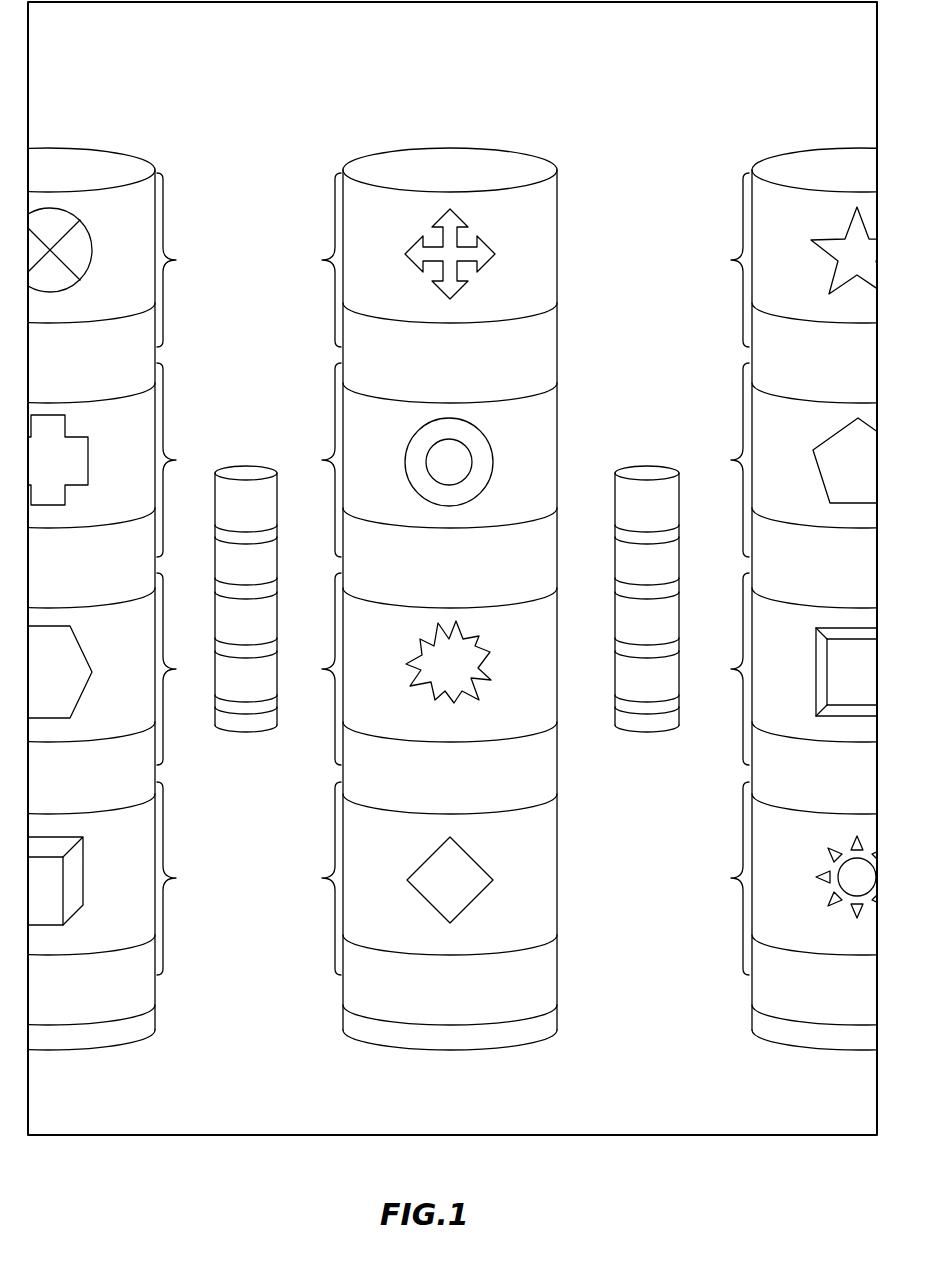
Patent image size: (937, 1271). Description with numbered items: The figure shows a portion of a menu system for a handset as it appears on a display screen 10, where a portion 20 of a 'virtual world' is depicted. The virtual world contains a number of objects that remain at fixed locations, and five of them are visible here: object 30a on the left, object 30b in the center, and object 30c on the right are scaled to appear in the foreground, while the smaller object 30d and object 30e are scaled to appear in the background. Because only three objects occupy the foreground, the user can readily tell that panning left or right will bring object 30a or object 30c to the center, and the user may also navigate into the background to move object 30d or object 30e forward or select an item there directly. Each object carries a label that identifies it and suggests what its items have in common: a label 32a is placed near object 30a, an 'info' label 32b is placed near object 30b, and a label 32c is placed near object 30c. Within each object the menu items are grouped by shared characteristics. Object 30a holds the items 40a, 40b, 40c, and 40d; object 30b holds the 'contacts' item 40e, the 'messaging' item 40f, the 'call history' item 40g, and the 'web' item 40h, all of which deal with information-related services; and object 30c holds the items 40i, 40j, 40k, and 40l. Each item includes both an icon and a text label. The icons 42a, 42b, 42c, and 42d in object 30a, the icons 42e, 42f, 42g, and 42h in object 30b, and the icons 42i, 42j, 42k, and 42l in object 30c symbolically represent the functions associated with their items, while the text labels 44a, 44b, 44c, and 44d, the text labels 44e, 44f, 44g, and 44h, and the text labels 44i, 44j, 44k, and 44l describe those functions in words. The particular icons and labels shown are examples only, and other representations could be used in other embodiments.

The display screen 10 is at (127, 1137).
The portion of virtual world 20 is at (142, 62).
The object 30a is at (94, 1052).
The object 30b is at (462, 1050).
The object 30c is at (790, 1048).
The object 30d is at (267, 738).
The object 30e is at (669, 738).
The label 32a is at (78, 125).
The info label 32b is at (483, 120).
The label 32c is at (798, 120).
The menu item 40a is at (177, 260).
The menu item 40b is at (177, 459).
The menu item 40c is at (177, 668).
The menu item 40d is at (177, 878).
The contacts item 40e is at (321, 260).
The messaging item 40f is at (321, 459).
The call history item 40g is at (321, 668).
The web item 40h is at (321, 878).
The menu item 40i is at (730, 260).
The menu item 40j is at (730, 459).
The menu item 40k is at (730, 668).
The menu item 40l is at (730, 878).
The icon 42a is at (88, 245).
The icon 42b is at (89, 447).
The icon 42c is at (83, 651).
The icon 42d is at (84, 851).
The icon 42e is at (490, 243).
The icon 42f is at (493, 452).
The icon 42g is at (488, 651).
The icon 42h is at (480, 860).
The icon 42i is at (826, 240).
The icon 42j is at (830, 440).
The icon 42k is at (815, 655).
The icon 42l is at (826, 872).
The text label 44a is at (88, 320).
The text label 44b is at (152, 518).
The text label 44c is at (152, 730).
The text label 44d is at (148, 936).
The text label 44e is at (551, 312).
The text label 44f is at (490, 527).
The text label 44g is at (490, 741).
The text label 44h is at (481, 953).
The text label 44i is at (800, 320).
The text label 44j is at (808, 526).
The text label 44k is at (801, 742).
The text label 44l is at (803, 947).